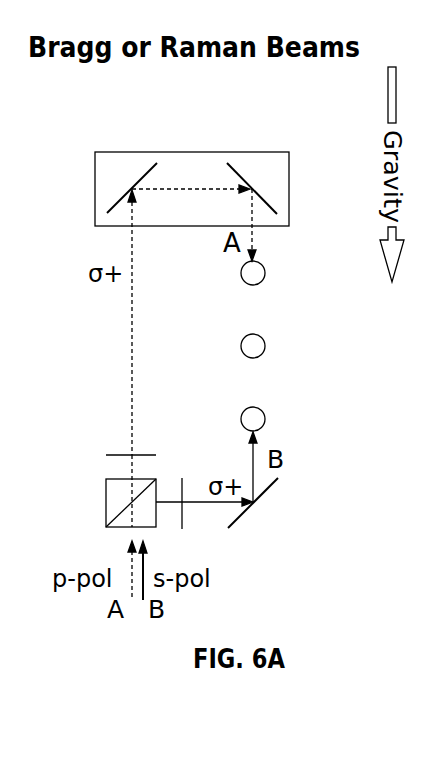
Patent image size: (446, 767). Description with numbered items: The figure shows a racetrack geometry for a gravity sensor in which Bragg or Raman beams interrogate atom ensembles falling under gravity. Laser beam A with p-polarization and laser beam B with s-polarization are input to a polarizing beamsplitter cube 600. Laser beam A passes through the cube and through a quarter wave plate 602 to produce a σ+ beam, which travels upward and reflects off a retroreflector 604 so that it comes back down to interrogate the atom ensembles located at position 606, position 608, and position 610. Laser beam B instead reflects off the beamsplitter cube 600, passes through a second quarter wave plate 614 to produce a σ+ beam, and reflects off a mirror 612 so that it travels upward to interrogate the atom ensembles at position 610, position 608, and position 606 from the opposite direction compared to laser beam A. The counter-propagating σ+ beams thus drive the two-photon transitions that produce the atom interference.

The polarizing beamsplitter cube 600 is at (111, 509).
The quarter wave plate 602 is at (120, 453).
The retroreflector 604 is at (165, 162).
The position 606 is at (265, 276).
The position 608 is at (265, 349).
The position 610 is at (265, 422).
The mirror 612 is at (273, 485).
The quarter wave plate 614 is at (182, 520).